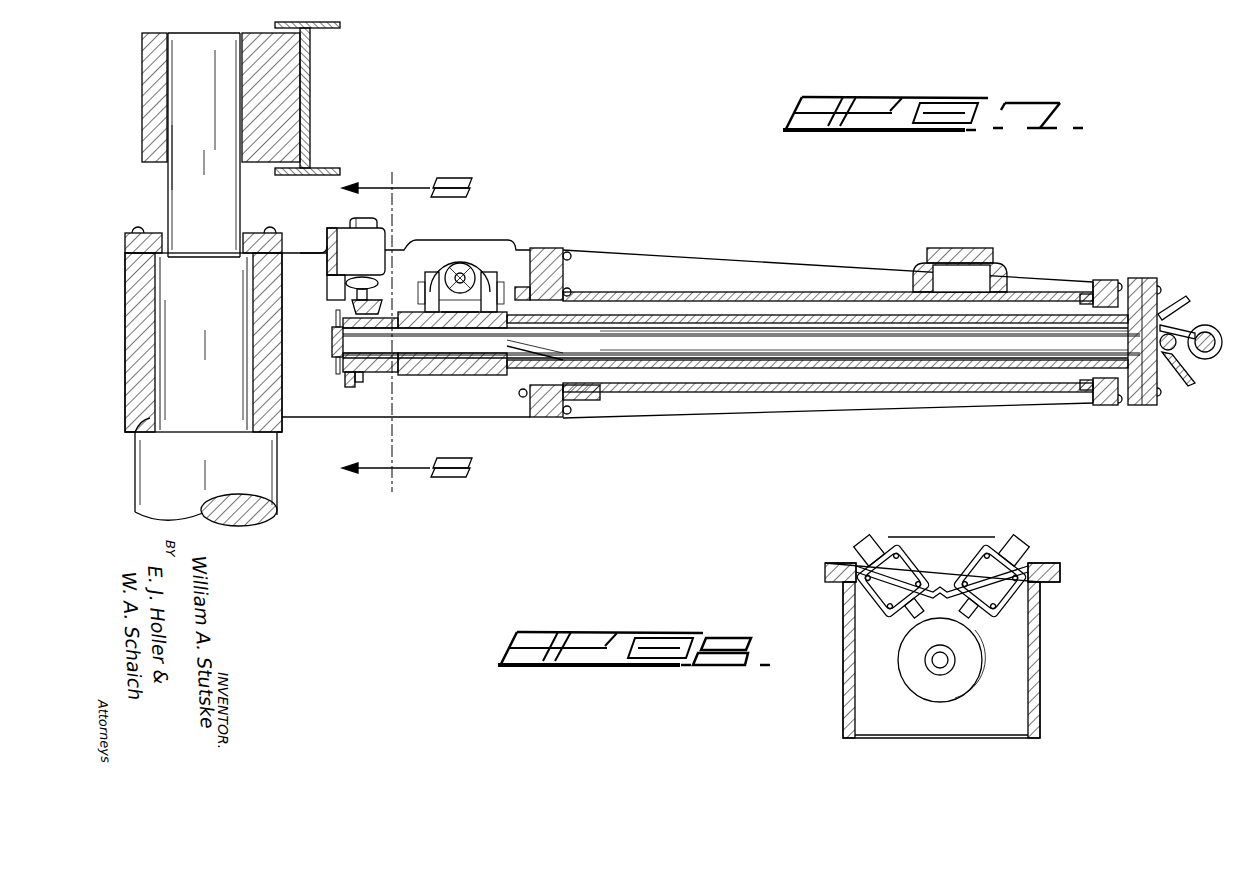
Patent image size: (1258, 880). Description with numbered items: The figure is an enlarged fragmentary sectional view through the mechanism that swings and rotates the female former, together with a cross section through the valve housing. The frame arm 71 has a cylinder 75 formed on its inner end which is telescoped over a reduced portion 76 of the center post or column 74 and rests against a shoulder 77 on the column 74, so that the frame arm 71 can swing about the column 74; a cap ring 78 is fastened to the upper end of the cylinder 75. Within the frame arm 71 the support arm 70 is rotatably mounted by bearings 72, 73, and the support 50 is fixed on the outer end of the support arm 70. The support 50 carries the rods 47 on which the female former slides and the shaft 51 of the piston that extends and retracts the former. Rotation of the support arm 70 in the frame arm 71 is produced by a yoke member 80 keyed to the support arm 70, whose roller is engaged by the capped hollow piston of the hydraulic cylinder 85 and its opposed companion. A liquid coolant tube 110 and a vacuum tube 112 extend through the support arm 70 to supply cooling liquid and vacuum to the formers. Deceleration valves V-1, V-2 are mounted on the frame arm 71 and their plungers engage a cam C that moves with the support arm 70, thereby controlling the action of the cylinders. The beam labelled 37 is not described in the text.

In FIG. 7, the support beam 37 is at (326, 87).
In FIG. 7, the cap ring 78 is at (138, 243).
In FIG. 7, the cylinder 75 is at (136, 292).
In FIG. 7, the reduced portion 76 is at (175, 325).
In FIG. 7, the shoulder 77 is at (140, 425).
In FIG. 7, the center post or column 74 is at (160, 470).
In FIG. 7, the deceleration valve V-2 is at (372, 240).
In FIG. 8, the deceleration valve V-2 is at (998, 575).
In FIG. 8, the deceleration valve V-1 is at (880, 568).
In FIG. 7, the hydraulic cylinder 85 is at (463, 252).
In FIG. 7, the yoke member 80 is at (492, 282).
In FIG. 7, the bearing 72 is at (567, 288).
In FIG. 7, the frame arm 71 is at (685, 297).
In FIG. 8, the frame arm 71 is at (1035, 642).
In FIG. 7, the support arm 70 is at (768, 317).
In FIG. 7, the vacuum tube 112 is at (796, 336).
In FIG. 7, the liquid coolant tube 110 is at (857, 355).
In FIG. 7, the bearing 73 is at (1098, 300).
In FIG. 7, the support 50 is at (1157, 282).
In FIG. 7, the rods 47 is at (1182, 328).
In FIG. 7, the shaft 51 is at (1208, 350).
In FIG. 7, the cam C is at (358, 374).
In FIG. 8, the cam C is at (933, 693).